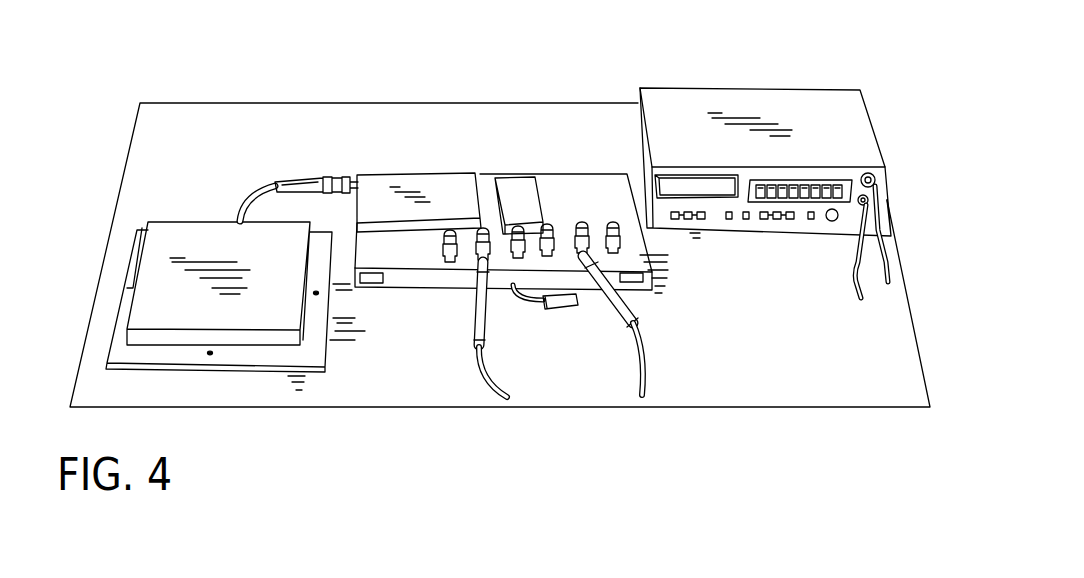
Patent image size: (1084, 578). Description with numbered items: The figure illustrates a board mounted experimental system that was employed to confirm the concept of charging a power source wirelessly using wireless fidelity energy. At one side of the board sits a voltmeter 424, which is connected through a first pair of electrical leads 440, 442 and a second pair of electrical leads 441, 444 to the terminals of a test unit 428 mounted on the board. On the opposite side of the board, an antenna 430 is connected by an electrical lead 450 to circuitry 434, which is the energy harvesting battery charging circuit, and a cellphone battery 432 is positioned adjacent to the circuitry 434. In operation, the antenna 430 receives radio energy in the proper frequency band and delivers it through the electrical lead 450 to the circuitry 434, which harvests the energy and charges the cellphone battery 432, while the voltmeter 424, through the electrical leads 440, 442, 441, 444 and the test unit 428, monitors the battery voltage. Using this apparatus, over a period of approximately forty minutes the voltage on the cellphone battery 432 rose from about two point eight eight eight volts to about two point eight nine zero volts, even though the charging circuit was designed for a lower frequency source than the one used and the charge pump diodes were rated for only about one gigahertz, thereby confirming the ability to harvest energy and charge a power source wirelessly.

The voltmeter 424 is at (745, 89).
The test unit 428 is at (557, 175).
The antenna 430 is at (249, 350).
The cellphone battery 432 is at (503, 177).
The circuitry 434 is at (385, 172).
The electrical lead 440 is at (852, 263).
The electrical lead 441 is at (878, 283).
The electrical lead 442 is at (650, 362).
The electrical lead 444 is at (472, 362).
The electrical lead 450 is at (314, 180).